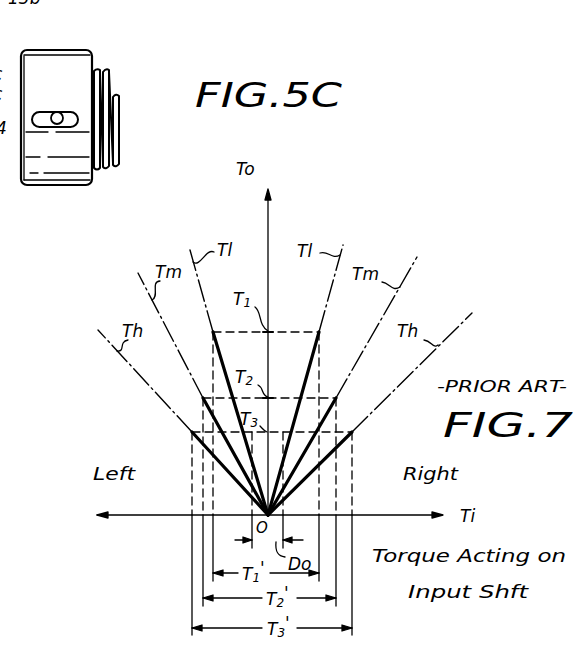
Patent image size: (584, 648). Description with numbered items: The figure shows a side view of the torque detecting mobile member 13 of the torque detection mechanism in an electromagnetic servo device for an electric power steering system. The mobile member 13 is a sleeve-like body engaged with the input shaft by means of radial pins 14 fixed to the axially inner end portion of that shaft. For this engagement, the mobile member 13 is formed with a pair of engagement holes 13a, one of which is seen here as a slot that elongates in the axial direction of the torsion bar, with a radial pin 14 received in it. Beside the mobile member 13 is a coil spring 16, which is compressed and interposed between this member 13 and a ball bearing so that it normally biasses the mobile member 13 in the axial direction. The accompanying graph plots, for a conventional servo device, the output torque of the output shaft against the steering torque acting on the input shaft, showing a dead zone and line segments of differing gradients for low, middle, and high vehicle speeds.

The mobile member 13 is at (68, 60).
The engagement hole 13a is at (78, 123).
The radial pin 14 is at (57, 116).
The coil spring 16 is at (112, 82).